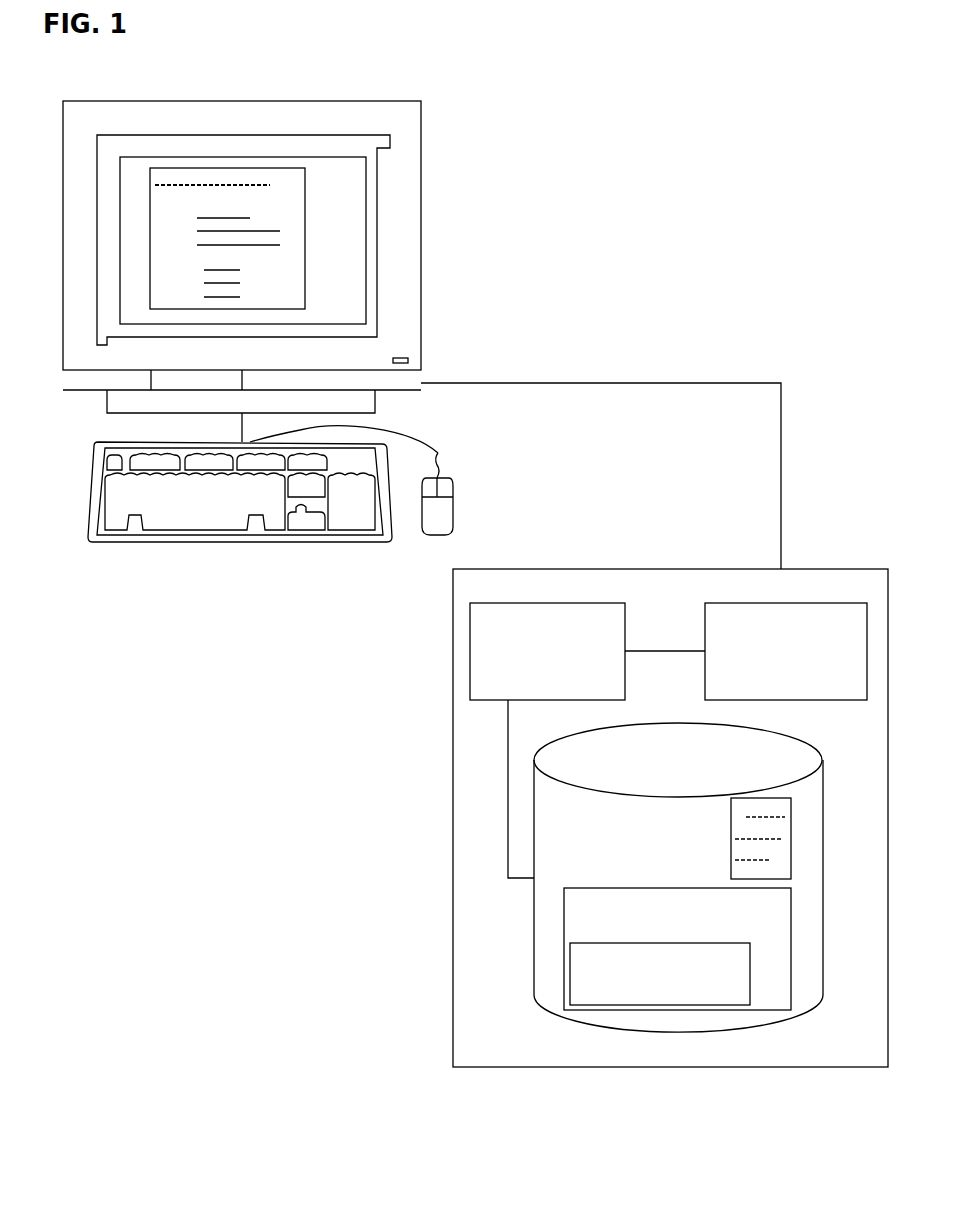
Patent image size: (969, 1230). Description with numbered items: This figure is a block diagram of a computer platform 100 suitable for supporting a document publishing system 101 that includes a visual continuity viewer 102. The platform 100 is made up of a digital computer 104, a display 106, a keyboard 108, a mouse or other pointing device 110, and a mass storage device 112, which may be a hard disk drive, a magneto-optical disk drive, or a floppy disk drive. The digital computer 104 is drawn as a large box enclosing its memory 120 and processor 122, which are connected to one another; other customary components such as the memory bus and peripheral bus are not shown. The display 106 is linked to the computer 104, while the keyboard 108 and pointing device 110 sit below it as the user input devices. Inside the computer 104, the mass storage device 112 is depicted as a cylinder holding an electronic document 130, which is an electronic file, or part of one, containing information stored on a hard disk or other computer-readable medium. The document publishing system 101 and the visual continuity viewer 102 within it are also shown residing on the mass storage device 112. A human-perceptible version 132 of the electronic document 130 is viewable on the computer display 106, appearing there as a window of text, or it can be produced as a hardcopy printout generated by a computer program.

The computer platform 100 is at (495, 100).
The display 106 is at (355, 195).
The human-perceptible version 132 is at (282, 262).
The mouse or other pointing device 110 is at (447, 487).
The keyboard 108 is at (240, 542).
The digital computer 104 is at (450, 708).
The processor 122 is at (705, 628).
The memory 120 is at (625, 675).
The mass storage device 112 is at (823, 882).
The electronic document 130 is at (730, 815).
The document publishing system 101 is at (573, 888).
The visual continuity viewer 102 is at (612, 943).